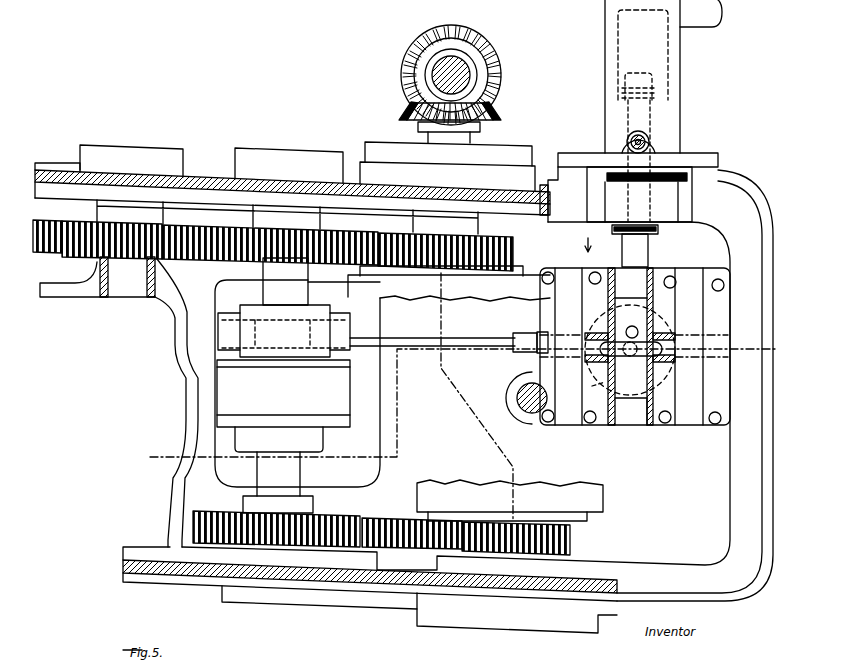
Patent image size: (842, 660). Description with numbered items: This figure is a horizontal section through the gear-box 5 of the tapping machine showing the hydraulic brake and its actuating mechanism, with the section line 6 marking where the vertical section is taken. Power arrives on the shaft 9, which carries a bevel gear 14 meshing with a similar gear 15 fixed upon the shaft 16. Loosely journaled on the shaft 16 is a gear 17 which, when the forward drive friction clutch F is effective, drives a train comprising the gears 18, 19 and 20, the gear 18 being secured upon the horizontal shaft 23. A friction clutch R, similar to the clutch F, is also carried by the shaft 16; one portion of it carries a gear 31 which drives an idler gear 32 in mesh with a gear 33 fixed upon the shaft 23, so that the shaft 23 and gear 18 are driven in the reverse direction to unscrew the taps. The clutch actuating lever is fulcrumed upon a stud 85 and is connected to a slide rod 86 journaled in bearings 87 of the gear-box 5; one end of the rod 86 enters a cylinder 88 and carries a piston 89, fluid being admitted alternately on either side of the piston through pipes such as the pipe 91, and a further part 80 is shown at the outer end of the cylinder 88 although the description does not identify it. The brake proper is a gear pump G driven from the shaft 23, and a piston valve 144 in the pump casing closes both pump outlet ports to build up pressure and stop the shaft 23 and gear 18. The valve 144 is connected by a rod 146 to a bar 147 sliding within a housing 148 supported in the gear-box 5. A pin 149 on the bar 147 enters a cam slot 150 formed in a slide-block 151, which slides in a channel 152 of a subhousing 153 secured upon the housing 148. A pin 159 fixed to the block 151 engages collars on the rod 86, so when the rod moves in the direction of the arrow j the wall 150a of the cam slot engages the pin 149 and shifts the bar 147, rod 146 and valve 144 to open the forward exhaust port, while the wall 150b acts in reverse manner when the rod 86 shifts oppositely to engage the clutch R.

The gear-box 5 is at (464, 384).
The section line 6— 6 is at (144, 456).
The shaft 9 is at (468, 74).
The bevel gear 14 is at (491, 43).
The bevel gear 15 is at (497, 118).
The shaft 16 is at (430, 137).
The gear 17 is at (510, 250).
The gear 18 is at (353, 227).
The gear 19 is at (192, 222).
The gear 20 is at (53, 254).
The shaft 23 is at (285, 281).
The gear 31 is at (572, 545).
The idler gear 32 is at (408, 520).
The gear 33 is at (350, 517).
The pin 80 is at (716, 25).
The stud 85 is at (517, 400).
The slide rod 86 is at (650, 262).
The bearings 87 is at (690, 178).
The cylinder 88 is at (605, 52).
The piston 89 is at (668, 97).
The fluid pressure pipe 91 is at (627, 143).
The piston valve 144 is at (306, 324).
The rod 146 is at (490, 347).
The bar 147 is at (575, 320).
The housing 148 is at (578, 418).
The pin 149 is at (668, 373).
The cam slot 150 is at (623, 366).
The cam-slot wall 150a is at (658, 307).
The cam-slot wall 150b is at (592, 386).
The slide-block 151 is at (640, 320).
The channel 152 is at (622, 432).
The subhousing 153 is at (668, 397).
The pin 159 is at (627, 330).
The forward drive friction clutch F is at (413, 294).
The gear pump G is at (283, 393).
The friction clutch R is at (603, 500).
The arrow j is at (592, 247).